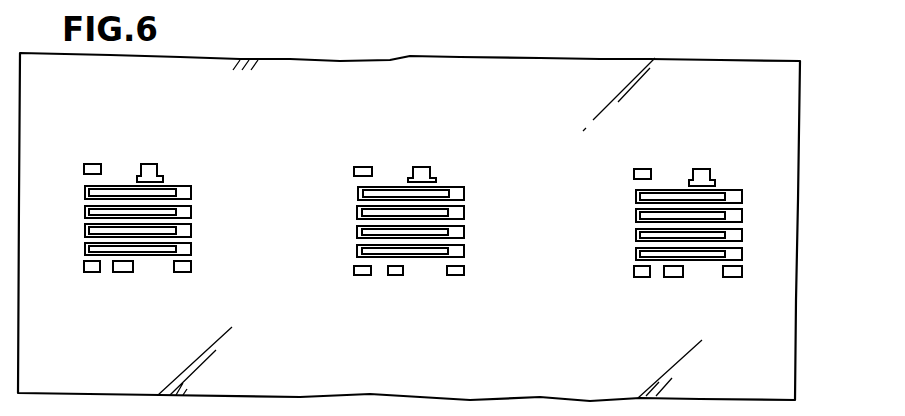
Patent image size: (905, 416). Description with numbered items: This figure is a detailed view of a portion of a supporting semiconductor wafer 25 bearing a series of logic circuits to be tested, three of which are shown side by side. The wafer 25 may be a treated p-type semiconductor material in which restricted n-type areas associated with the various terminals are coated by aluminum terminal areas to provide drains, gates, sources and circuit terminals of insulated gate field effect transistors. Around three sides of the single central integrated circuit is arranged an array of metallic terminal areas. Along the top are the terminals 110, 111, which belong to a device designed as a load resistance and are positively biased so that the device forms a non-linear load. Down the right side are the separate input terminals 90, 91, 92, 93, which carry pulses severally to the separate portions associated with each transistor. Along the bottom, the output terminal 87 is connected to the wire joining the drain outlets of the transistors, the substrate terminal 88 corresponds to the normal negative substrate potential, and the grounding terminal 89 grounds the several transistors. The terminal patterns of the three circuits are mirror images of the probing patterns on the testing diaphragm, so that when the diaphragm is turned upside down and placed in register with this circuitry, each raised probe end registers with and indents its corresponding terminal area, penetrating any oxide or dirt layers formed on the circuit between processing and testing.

The wafer 25 is at (457, 57).
The terminal 110 is at (364, 166).
The terminal 111 is at (425, 167).
The input terminal 90 is at (462, 190).
The input terminal 91 is at (457, 212).
The input terminal 92 is at (460, 233).
The input terminal 93 is at (460, 252).
The output terminal 87 is at (361, 275).
The substrate terminal 88 is at (395, 275).
The grounding terminal 89 is at (456, 275).